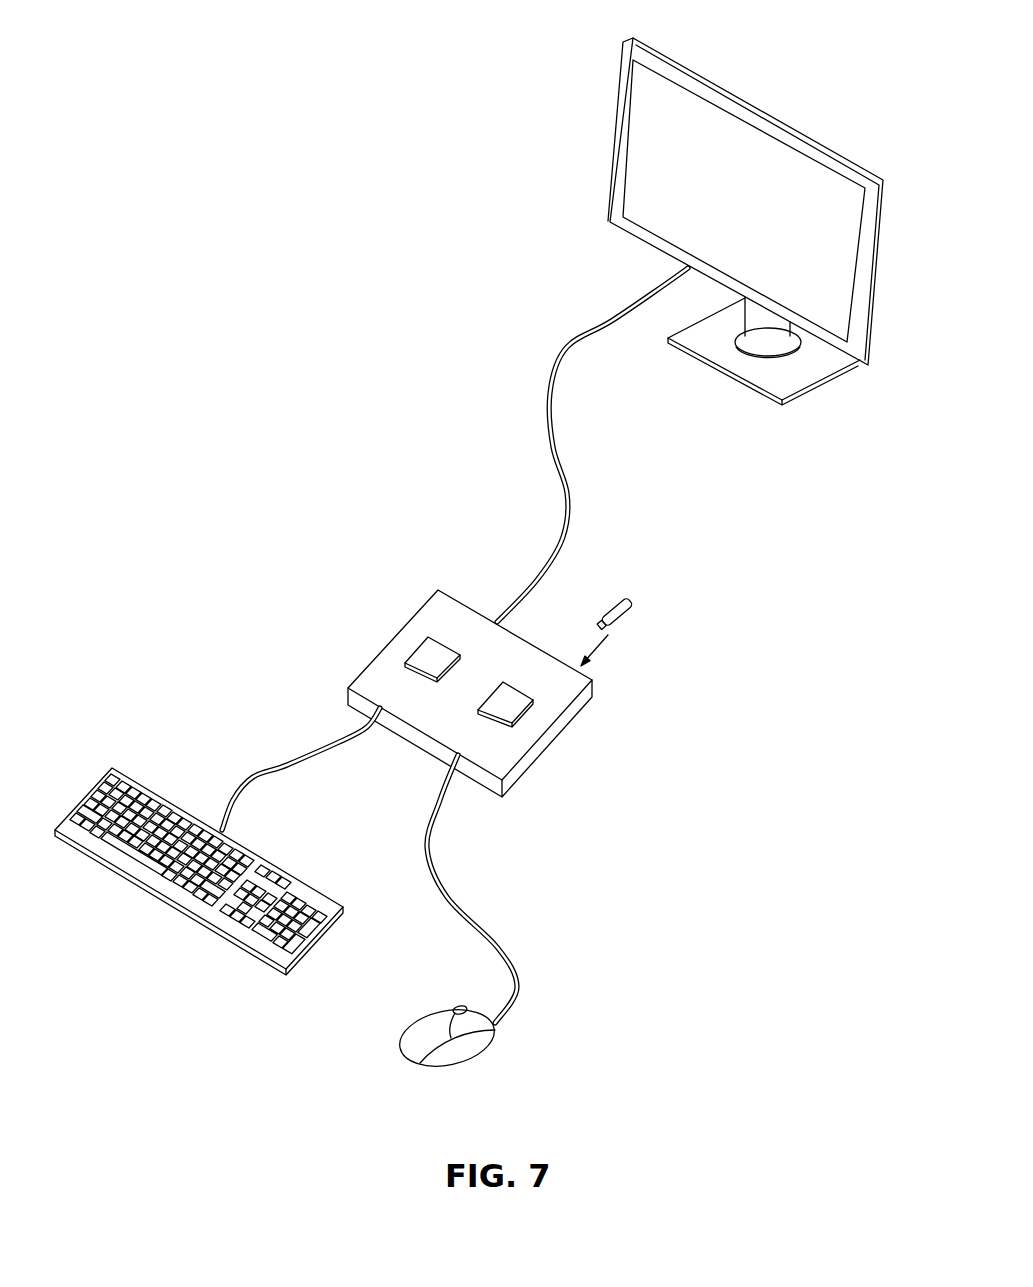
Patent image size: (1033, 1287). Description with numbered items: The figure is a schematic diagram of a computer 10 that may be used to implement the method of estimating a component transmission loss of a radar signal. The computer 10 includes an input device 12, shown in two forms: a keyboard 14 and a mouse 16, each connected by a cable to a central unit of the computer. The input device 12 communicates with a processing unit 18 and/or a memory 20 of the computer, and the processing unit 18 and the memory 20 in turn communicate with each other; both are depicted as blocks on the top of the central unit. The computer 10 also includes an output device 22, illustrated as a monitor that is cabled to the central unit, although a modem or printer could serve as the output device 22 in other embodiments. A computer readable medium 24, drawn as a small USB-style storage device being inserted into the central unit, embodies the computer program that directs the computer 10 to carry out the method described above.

The computer 10 is at (256, 52).
The input device 12 is at (280, 899).
The keyboard 14 is at (63, 828).
The mouse 16 is at (453, 1047).
The processing unit 18 is at (432, 658).
The memory 20 is at (505, 703).
The output device 22 is at (877, 313).
The computer readable medium 24 is at (630, 620).